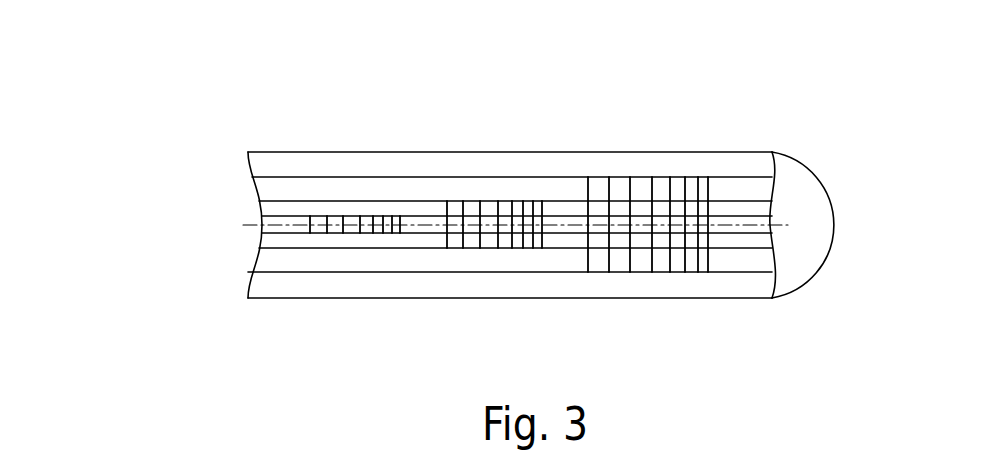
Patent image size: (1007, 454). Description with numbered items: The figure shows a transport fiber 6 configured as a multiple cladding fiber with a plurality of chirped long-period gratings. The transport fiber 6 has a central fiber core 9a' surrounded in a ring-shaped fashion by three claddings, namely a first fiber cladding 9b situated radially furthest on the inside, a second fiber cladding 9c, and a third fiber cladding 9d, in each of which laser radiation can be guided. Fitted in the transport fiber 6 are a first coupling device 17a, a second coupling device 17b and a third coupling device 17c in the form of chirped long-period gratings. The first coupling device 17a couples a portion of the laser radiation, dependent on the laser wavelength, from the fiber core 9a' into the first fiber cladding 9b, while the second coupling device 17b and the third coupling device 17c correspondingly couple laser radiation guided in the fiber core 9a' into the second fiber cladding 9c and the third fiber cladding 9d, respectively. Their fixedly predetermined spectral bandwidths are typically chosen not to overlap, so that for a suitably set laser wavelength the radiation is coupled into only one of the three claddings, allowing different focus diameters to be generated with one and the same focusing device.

The transport fiber 6 is at (508, 177).
The fiber core 9a' is at (485, 189).
The first fiber cladding 9b is at (274, 205).
The second fiber cladding 9c is at (321, 192).
The third fiber cladding 9d is at (437, 168).
The first coupling device 17a is at (345, 220).
The second coupling device 17b is at (482, 208).
The third coupling device 17c is at (685, 197).